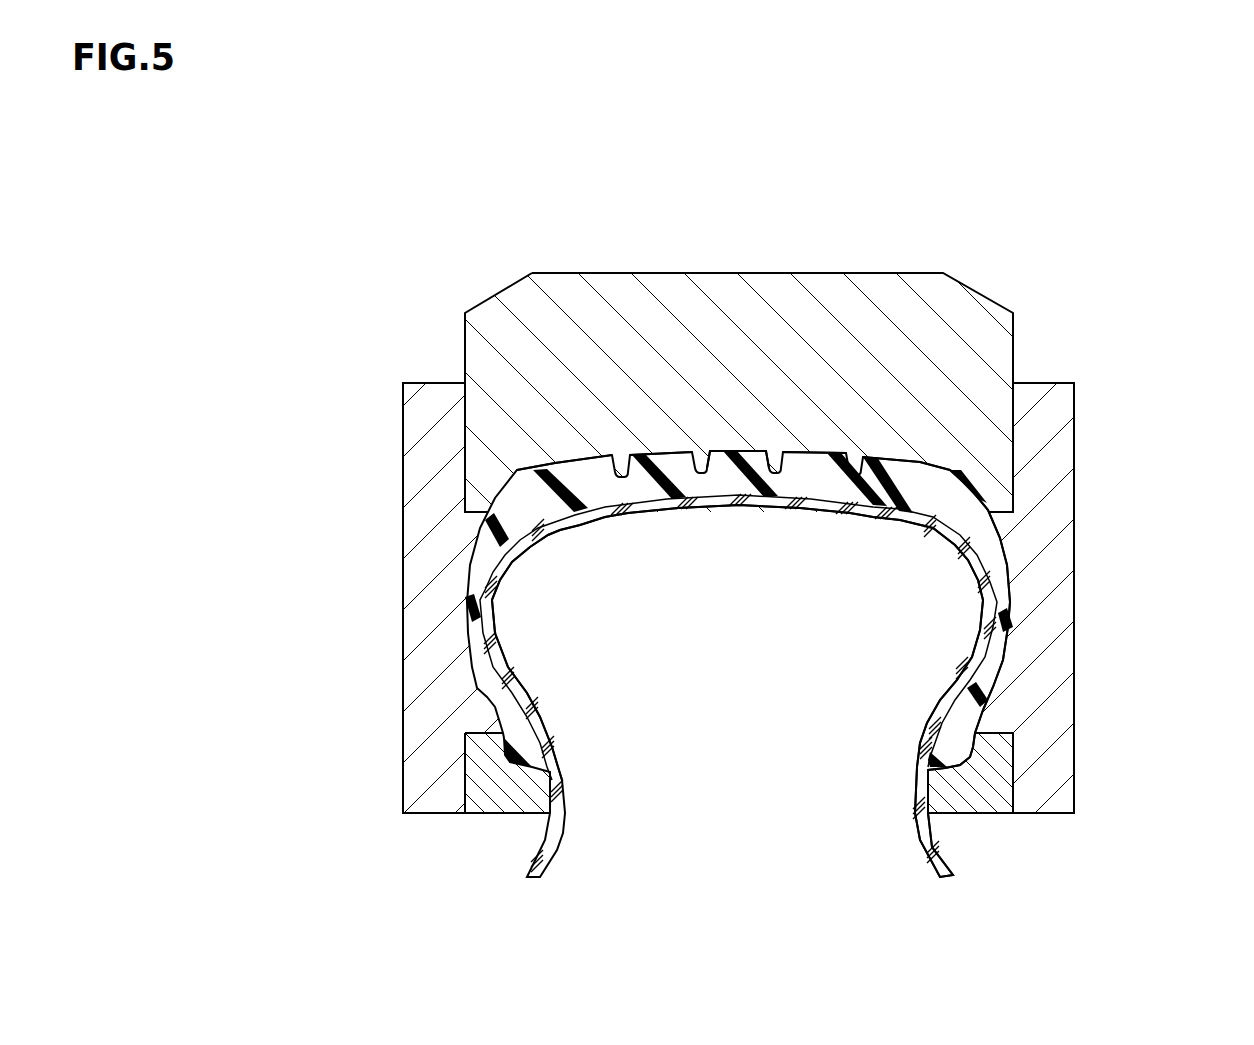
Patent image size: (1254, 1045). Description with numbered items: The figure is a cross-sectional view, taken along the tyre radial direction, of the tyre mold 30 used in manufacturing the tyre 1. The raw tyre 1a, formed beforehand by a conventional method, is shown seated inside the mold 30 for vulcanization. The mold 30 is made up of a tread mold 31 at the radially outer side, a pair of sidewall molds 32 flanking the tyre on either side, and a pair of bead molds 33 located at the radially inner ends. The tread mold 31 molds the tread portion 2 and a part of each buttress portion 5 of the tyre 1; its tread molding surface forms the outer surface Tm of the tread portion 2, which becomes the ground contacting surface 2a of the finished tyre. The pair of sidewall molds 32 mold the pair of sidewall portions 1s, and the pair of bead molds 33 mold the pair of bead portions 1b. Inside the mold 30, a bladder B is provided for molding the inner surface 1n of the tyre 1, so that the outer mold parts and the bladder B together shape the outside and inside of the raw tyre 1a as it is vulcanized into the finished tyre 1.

The tyre 1 is at (518, 505).
The raw tyre 1a is at (670, 375).
The tread portion 2 is at (723, 482).
The ground contacting surface 2a is at (667, 447).
The outer surface of the tread portion Tm is at (755, 452).
The buttress portion 5 is at (965, 505).
The tyre mold 30 is at (816, 573).
The tread mold 31 is at (952, 317).
The sidewall mold 32 is at (1053, 510).
The bead mold 33 is at (986, 795).
The sidewall portion 1s is at (1011, 582).
The inner surface of the tyre 1n is at (906, 525).
The bead portion 1b is at (962, 724).
The bladder B is at (922, 832).